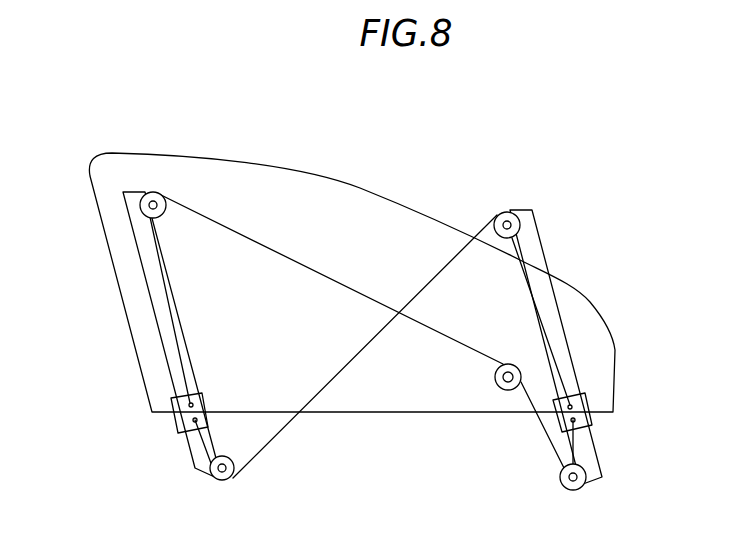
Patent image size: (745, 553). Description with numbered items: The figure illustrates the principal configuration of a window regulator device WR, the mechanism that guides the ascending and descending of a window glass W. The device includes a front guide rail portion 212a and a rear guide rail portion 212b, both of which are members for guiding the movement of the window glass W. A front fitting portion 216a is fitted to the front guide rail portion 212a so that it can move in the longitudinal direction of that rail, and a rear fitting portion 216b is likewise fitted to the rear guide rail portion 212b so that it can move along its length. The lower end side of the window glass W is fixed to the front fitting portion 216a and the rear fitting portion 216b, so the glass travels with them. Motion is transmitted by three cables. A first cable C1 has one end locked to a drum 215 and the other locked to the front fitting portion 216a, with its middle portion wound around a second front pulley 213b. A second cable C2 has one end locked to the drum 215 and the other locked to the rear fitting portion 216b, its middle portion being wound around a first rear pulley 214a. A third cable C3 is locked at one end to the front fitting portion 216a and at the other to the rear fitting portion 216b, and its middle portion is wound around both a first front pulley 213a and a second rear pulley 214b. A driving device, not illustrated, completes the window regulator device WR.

The window glass W is at (290, 178).
The window regulator device WR is at (570, 186).
The front guide rail portion 212a is at (538, 240).
The rear guide rail portion 212b is at (137, 247).
The first front pulley 213a is at (507, 211).
The second front pulley 213b is at (572, 491).
The first rear pulley 214a is at (154, 192).
The second rear pulley 214b is at (222, 481).
The drum 215 is at (510, 391).
The front fitting portion 216a is at (593, 418).
The rear fitting portion 216b is at (178, 425).
The first cable C1 is at (550, 457).
The second cable C2 is at (363, 290).
The third cable C3 is at (360, 380).